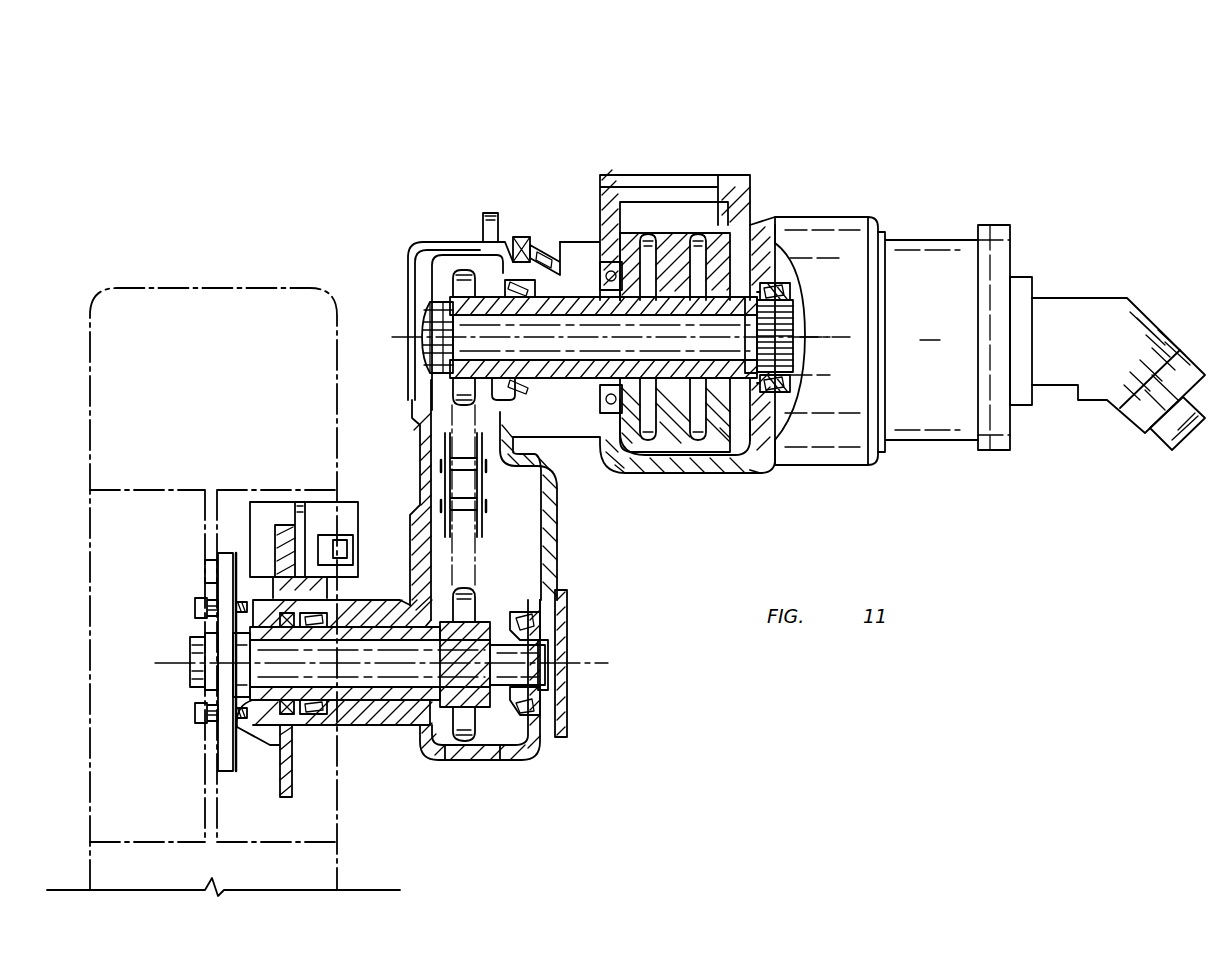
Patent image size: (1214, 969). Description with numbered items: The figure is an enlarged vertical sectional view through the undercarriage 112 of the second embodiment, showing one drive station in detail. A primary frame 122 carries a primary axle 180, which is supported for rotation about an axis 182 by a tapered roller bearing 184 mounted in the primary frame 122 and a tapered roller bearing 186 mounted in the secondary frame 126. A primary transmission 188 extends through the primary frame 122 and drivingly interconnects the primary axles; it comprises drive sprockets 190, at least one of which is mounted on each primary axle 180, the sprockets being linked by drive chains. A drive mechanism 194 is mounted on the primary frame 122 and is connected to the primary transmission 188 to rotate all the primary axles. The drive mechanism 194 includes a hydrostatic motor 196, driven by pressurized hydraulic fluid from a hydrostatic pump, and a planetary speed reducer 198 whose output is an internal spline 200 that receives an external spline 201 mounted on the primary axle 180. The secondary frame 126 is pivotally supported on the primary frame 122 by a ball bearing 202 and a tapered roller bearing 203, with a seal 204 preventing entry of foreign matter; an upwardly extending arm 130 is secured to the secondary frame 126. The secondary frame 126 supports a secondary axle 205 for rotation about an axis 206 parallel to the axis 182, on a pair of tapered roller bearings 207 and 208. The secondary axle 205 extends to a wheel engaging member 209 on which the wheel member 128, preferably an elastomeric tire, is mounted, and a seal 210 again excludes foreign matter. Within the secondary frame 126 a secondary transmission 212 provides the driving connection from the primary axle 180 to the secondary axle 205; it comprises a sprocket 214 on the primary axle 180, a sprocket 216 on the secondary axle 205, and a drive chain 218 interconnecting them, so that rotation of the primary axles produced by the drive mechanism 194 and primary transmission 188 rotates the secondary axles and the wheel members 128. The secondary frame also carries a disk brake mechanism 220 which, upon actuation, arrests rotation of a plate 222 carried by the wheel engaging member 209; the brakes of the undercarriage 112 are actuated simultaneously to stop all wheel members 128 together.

The undercarriage 112 is at (405, 150).
The primary frame 122 is at (638, 479).
The secondary frame 126 is at (560, 569).
The wheel member 128 is at (140, 760).
The upwardly extending arm 130 is at (500, 255).
The primary axle 180 is at (490, 331).
The axis 182 is at (420, 335).
The tapered roller bearing 184 is at (745, 398).
The tapered roller bearing 186 is at (505, 282).
The primary transmission 188 is at (708, 226).
The drive sprocket 190 is at (705, 458).
The drive mechanism 194 is at (950, 212).
The hydrostatic motor 196 is at (1075, 298).
The planetary speed reducer 198 is at (920, 446).
The internal spline 200 is at (770, 285).
The external spline 201 is at (797, 349).
The ball bearing 202 is at (608, 262).
The tapered roller bearing 203 is at (545, 250).
The seal 204 is at (520, 237).
The secondary axle 205 is at (330, 664).
The axis 206 is at (590, 663).
The tapered roller bearing 207 is at (522, 718).
The tapered roller bearing 208 is at (333, 612).
The wheel engaging member 209 is at (226, 773).
The seal 210 is at (298, 716).
The secondary transmission 212 is at (510, 519).
The sprocket 214 is at (445, 395).
The sprocket 216 is at (468, 760).
The drive chain 218 is at (445, 458).
The disk brake mechanism 220 is at (308, 498).
The plate 222 is at (288, 800).